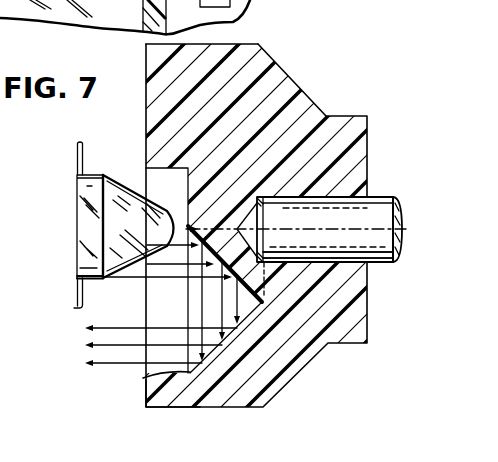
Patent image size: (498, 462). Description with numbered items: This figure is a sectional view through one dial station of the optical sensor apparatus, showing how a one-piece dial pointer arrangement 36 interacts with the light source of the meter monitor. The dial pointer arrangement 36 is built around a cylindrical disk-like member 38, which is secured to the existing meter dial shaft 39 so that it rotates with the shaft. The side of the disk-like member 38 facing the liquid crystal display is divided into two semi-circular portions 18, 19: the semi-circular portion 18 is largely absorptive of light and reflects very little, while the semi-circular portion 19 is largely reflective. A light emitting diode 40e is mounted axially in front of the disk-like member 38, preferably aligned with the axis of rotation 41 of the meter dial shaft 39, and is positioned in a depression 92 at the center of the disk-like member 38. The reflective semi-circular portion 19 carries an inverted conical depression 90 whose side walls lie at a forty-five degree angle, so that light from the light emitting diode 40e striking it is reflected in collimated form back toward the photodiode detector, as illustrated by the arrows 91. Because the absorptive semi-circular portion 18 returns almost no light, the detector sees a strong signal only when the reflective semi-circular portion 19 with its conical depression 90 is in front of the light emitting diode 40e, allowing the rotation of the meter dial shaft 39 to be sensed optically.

The semi-circular portion 18 is at (145, 68).
The semi-circular portion 19 is at (146, 394).
The dial pointer arrangement 36 is at (289, 72).
The cylindrical disk-like member 38 is at (257, 44).
The meter dial shaft 39 is at (372, 210).
The light emitting diode 40e is at (88, 230).
The axis of rotation 41 is at (372, 236).
The inverted conical depression 90 is at (144, 376).
The arrows 91 is at (80, 356).
The depression 92 is at (185, 191).